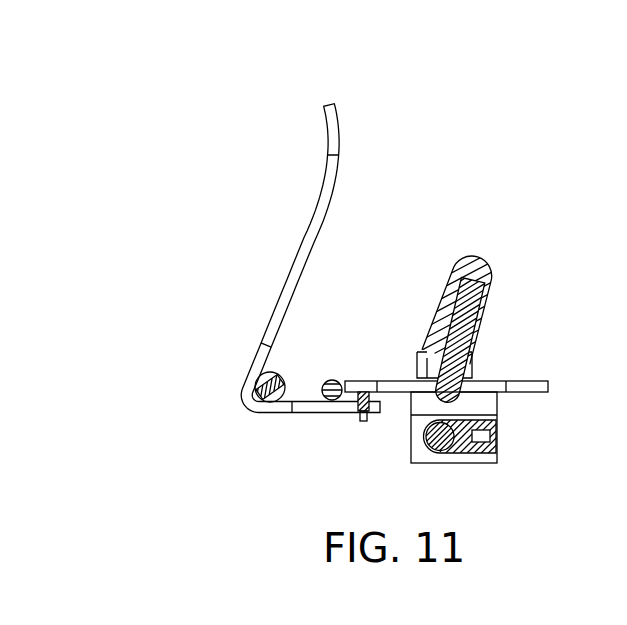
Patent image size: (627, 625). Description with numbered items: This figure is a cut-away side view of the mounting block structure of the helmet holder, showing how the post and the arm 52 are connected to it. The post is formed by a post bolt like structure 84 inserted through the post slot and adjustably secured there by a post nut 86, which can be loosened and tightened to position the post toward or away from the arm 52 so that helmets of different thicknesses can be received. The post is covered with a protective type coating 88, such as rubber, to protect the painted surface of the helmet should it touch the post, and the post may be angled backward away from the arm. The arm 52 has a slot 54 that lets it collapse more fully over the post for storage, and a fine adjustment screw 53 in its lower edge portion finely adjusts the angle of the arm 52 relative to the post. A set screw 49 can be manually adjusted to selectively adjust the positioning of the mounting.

The set screw 49 is at (490, 436).
The arm 52 is at (248, 375).
The fine adjustment screw 53 is at (363, 408).
The slot 54 is at (313, 242).
The post bolt like structure 84 is at (465, 268).
The post nut 86 is at (472, 370).
The protective type coating 88 is at (488, 272).